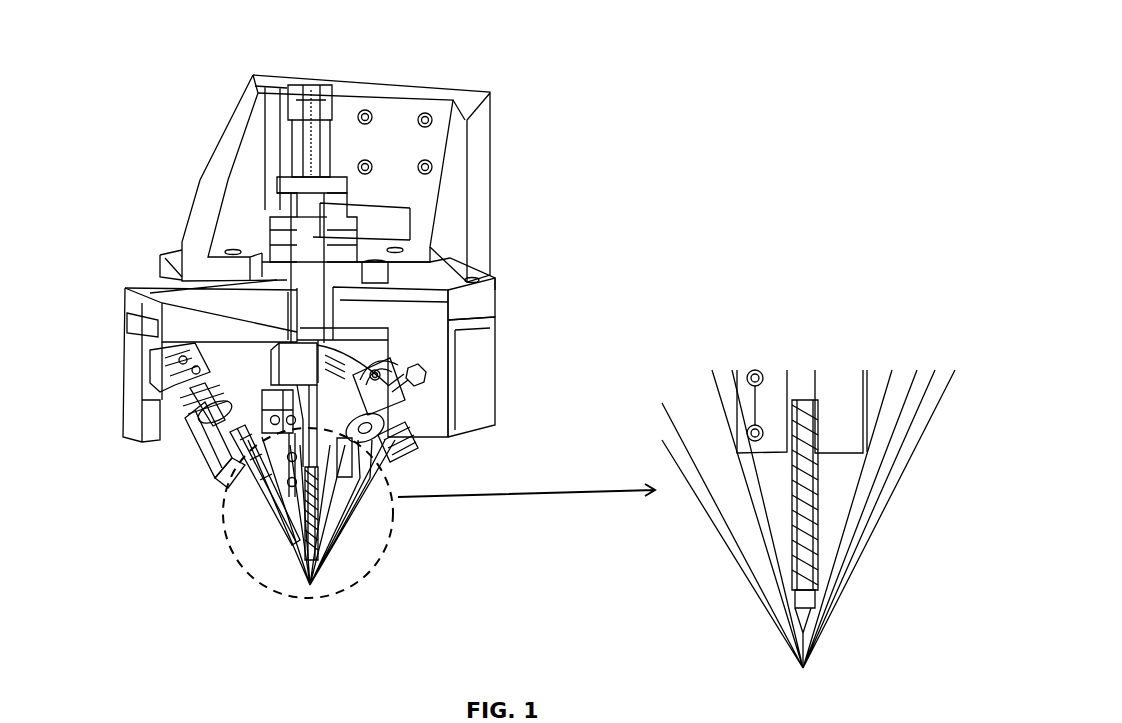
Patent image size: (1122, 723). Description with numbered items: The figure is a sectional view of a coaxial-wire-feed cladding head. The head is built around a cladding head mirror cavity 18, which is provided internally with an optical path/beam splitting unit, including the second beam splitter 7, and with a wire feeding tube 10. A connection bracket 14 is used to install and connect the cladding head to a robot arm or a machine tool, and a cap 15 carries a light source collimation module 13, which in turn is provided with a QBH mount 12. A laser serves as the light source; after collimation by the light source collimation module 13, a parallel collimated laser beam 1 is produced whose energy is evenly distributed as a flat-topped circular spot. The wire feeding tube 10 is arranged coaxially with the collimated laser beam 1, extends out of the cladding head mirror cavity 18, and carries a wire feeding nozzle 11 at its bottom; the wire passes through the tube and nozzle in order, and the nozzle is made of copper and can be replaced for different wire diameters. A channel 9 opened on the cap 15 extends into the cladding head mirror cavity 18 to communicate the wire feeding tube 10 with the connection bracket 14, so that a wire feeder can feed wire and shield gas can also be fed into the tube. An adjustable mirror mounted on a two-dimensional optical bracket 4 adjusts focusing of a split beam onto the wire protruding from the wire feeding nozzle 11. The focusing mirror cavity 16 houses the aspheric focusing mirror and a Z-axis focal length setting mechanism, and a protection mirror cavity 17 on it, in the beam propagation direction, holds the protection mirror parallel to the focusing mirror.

The collimated laser beam 1 is at (245, 246).
The two-dimensional optical bracket 4 is at (163, 398).
The second beam splitter 7 is at (302, 365).
The channel 9 is at (380, 310).
The wire feeding tube 10 is at (318, 500).
The wire feeding nozzle 11 is at (318, 555).
The QBH mount 12 is at (298, 148).
The light source collimation module 13 is at (283, 207).
The connection bracket 14 is at (465, 165).
The cap 15 is at (475, 290).
The focusing mirror cavity 16 is at (200, 443).
The protection mirror cavity 17 is at (215, 472).
The cladding head mirror cavity 18 is at (475, 380).